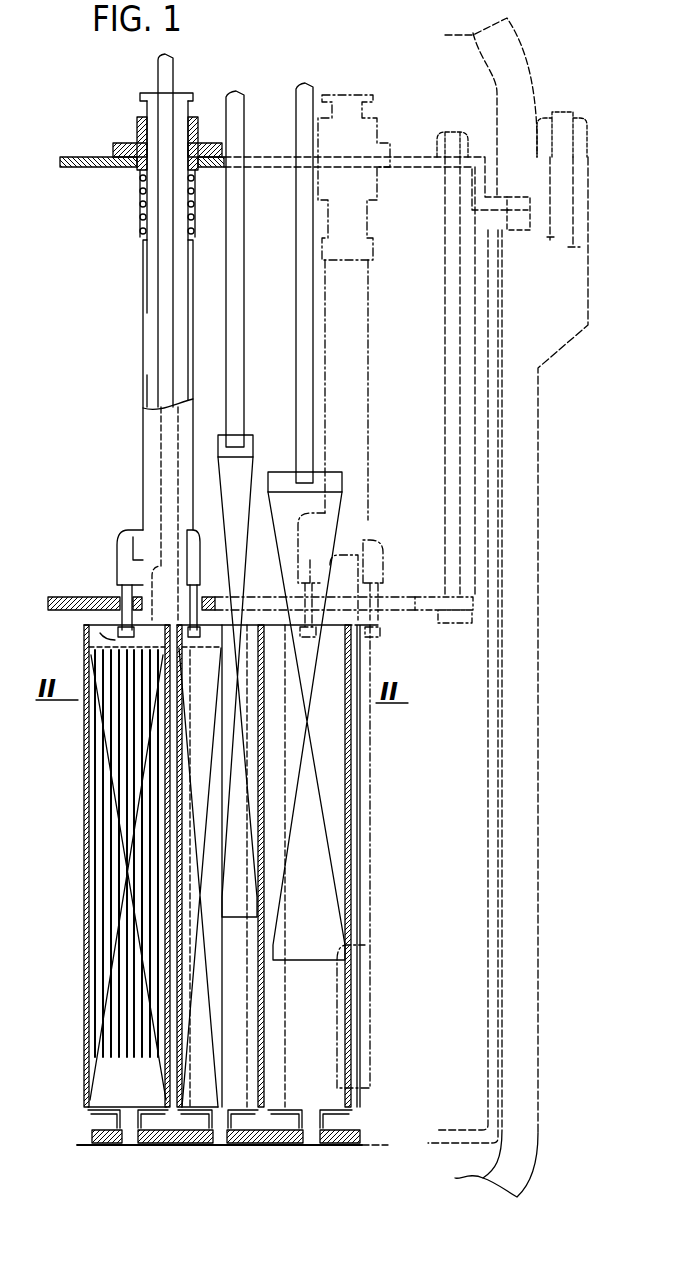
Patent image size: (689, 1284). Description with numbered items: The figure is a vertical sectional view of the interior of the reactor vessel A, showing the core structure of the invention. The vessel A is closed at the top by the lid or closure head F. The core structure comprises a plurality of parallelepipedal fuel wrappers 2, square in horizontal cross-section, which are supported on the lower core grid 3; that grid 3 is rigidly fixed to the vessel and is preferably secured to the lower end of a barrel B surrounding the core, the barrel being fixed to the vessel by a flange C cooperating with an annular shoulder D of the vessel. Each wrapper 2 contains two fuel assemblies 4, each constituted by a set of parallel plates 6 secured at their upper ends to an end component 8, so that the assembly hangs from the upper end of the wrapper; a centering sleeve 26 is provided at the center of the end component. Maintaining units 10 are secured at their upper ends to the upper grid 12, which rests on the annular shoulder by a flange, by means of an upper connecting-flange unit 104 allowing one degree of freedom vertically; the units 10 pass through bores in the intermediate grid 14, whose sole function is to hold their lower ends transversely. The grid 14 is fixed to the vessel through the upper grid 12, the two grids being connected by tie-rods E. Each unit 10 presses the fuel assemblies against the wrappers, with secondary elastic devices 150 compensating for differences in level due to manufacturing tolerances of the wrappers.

The fuel wrapper 2 is at (90, 843).
The lower core grid 3 is at (92, 1130).
The fuel assembly 4 is at (90, 763).
The parallel plates 6 is at (140, 1058).
The end component 8 is at (113, 632).
The maintaining unit 10 is at (144, 432).
The upper grid 12 is at (100, 170).
The intermediate grid 14 is at (64, 597).
The centering sleeve 26 is at (100, 636).
The upper connecting-flange unit 104 is at (131, 141).
The secondary elastic device 150 is at (120, 530).
The reactor vessel A is at (530, 493).
The barrel B is at (487, 672).
The flange C is at (530, 237).
The annular shoulder D is at (512, 200).
The tie-rods E is at (455, 385).
The closure head F is at (526, 83).